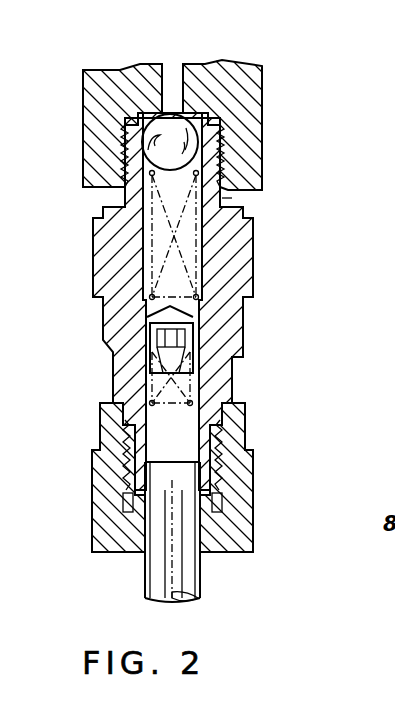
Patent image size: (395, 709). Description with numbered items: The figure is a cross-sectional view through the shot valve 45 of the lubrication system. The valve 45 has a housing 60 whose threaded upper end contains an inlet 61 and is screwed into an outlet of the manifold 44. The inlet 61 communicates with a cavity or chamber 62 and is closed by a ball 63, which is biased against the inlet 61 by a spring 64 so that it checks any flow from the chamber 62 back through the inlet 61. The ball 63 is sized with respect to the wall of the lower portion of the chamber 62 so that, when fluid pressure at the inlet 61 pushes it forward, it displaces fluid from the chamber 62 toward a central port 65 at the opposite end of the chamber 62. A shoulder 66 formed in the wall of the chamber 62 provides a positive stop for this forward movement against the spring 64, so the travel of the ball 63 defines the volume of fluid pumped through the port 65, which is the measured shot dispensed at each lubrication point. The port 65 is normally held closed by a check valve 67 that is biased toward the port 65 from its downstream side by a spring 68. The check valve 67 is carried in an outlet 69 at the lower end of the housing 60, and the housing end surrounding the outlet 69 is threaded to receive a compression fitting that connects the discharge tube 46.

The manifold 44 is at (245, 93).
The shot valve 45 is at (275, 321).
The discharge tube 46 is at (203, 580).
The housing 60 is at (103, 312).
The inlet 61 is at (190, 70).
The chamber 62 is at (236, 160).
The ball 63 is at (148, 147).
The spring 64 is at (226, 198).
The central port 65 is at (250, 290).
The shoulder 66 is at (143, 215).
The check valve 67 is at (115, 350).
The spring 68 is at (228, 381).
The outlet 69 is at (115, 390).